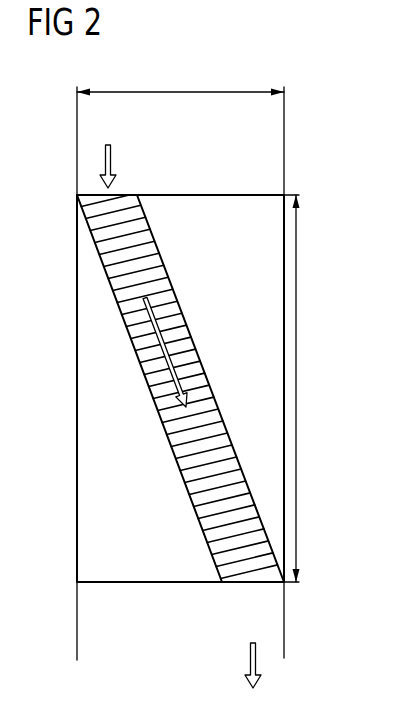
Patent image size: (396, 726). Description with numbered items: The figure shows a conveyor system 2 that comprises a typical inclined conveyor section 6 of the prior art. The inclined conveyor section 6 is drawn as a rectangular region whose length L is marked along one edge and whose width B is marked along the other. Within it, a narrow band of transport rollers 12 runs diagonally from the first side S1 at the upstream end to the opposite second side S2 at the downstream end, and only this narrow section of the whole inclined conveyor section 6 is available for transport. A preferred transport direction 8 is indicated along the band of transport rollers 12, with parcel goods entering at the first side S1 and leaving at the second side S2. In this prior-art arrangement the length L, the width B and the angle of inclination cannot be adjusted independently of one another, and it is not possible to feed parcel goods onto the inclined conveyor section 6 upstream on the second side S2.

The conveyor system 2 is at (63, 171).
The inclined conveyor section 6 is at (65, 195).
The preferred transport direction 8 is at (172, 362).
The transport rollers 12 is at (162, 280).
The width B is at (180, 91).
The length L is at (296, 389).
The first side S1 is at (78, 135).
The second side S2 is at (222, 593).